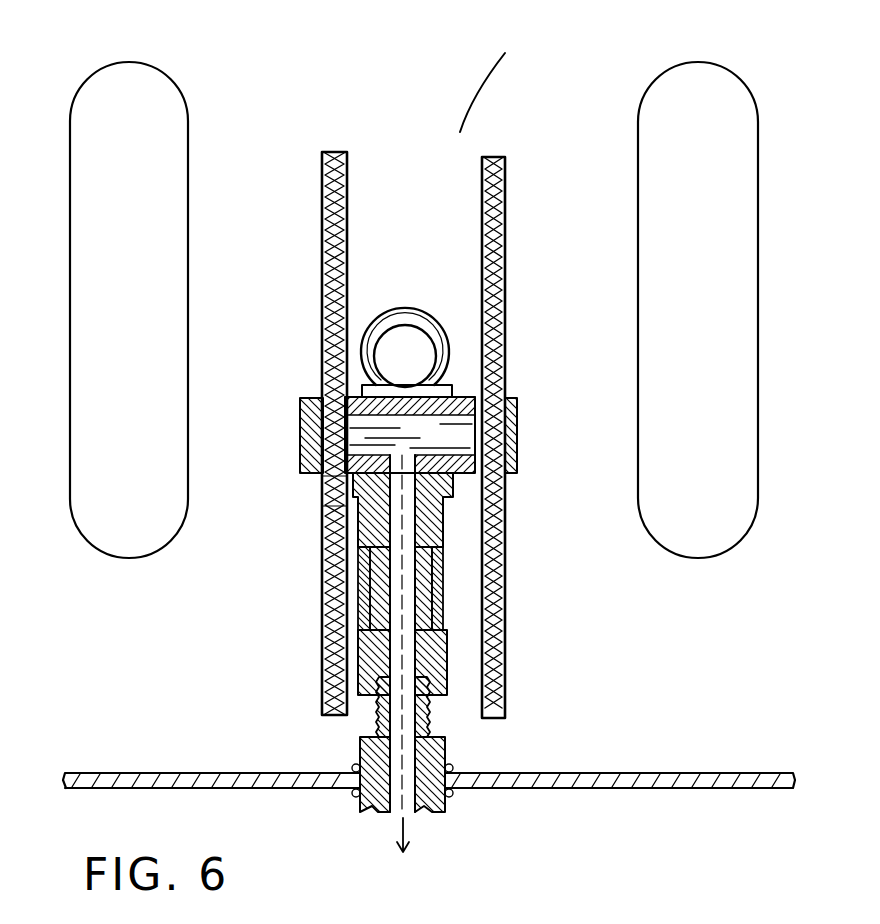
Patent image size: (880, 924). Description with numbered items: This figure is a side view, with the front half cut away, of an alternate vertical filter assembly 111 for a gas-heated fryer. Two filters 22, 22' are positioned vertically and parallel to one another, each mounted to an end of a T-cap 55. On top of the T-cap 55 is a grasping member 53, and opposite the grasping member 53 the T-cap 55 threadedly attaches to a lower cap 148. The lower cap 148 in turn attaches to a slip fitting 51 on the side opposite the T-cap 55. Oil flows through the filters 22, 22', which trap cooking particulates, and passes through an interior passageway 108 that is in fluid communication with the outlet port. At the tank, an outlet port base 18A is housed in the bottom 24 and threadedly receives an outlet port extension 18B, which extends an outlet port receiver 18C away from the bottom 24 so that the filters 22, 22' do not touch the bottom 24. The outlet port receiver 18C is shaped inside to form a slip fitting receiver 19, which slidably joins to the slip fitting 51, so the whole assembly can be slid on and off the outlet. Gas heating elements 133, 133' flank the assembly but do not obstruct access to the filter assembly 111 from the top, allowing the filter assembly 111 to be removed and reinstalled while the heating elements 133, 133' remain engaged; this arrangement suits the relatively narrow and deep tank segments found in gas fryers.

The filter assembly 111 is at (512, 82).
The gas heating element 133 is at (167, 310).
The gas heating element 133' is at (656, 310).
The filter 22 is at (286, 433).
The filter 22' is at (526, 437).
The interior passageway 108 is at (322, 490).
The grasping member 53 is at (452, 350).
The T-cap 55 is at (503, 390).
The lower cap 148 is at (443, 511).
The slip fitting 51 is at (432, 553).
The slip fitting receiver 19 is at (443, 620).
The outlet port receiver 18C is at (447, 657).
The outlet port extension 18B is at (430, 728).
The outlet port base 18A is at (450, 763).
The bottom 24 is at (188, 773).